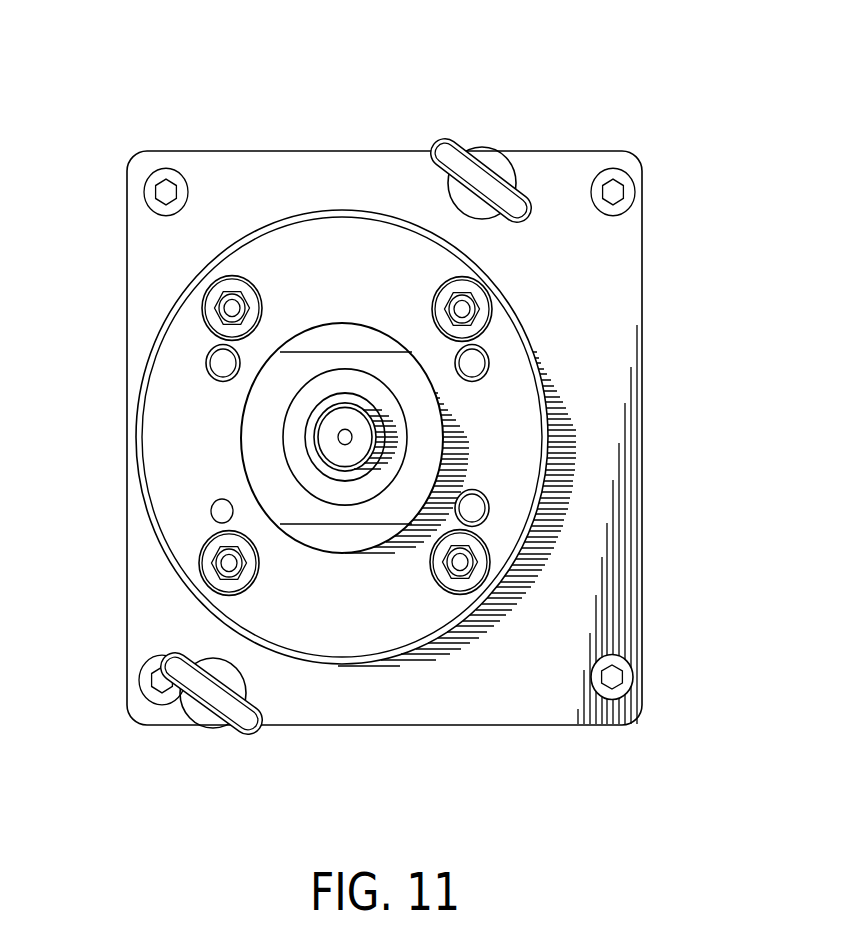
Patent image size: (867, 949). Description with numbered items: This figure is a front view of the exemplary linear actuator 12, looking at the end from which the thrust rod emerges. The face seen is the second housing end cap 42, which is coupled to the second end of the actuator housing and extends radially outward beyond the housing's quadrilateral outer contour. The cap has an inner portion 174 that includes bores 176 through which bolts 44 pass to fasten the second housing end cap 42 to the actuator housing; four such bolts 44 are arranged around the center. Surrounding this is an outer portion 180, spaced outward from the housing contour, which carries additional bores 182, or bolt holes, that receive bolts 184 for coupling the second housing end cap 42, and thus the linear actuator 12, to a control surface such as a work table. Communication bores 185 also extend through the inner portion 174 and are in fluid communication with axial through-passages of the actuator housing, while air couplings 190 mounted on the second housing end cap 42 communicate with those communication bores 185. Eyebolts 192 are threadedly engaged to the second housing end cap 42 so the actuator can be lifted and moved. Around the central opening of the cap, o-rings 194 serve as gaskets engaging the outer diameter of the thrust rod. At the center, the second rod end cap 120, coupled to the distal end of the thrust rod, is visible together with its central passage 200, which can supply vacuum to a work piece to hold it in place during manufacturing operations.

The linear actuator 12 is at (70, 95).
The second housing end cap 42 is at (617, 591).
The bolts 44 is at (229, 300).
The second rod end cap 120 is at (317, 462).
The inner portion 174 is at (510, 412).
The bores 176 is at (488, 317).
The outer portion 180 is at (608, 456).
The additional bores 182 is at (631, 688).
The bolts 184 is at (613, 690).
The communication bores 185 is at (208, 376).
The air couplings 190 is at (488, 508).
The eyebolts 192 is at (476, 146).
The o-rings 194 is at (218, 358).
The central passage 200 is at (343, 437).